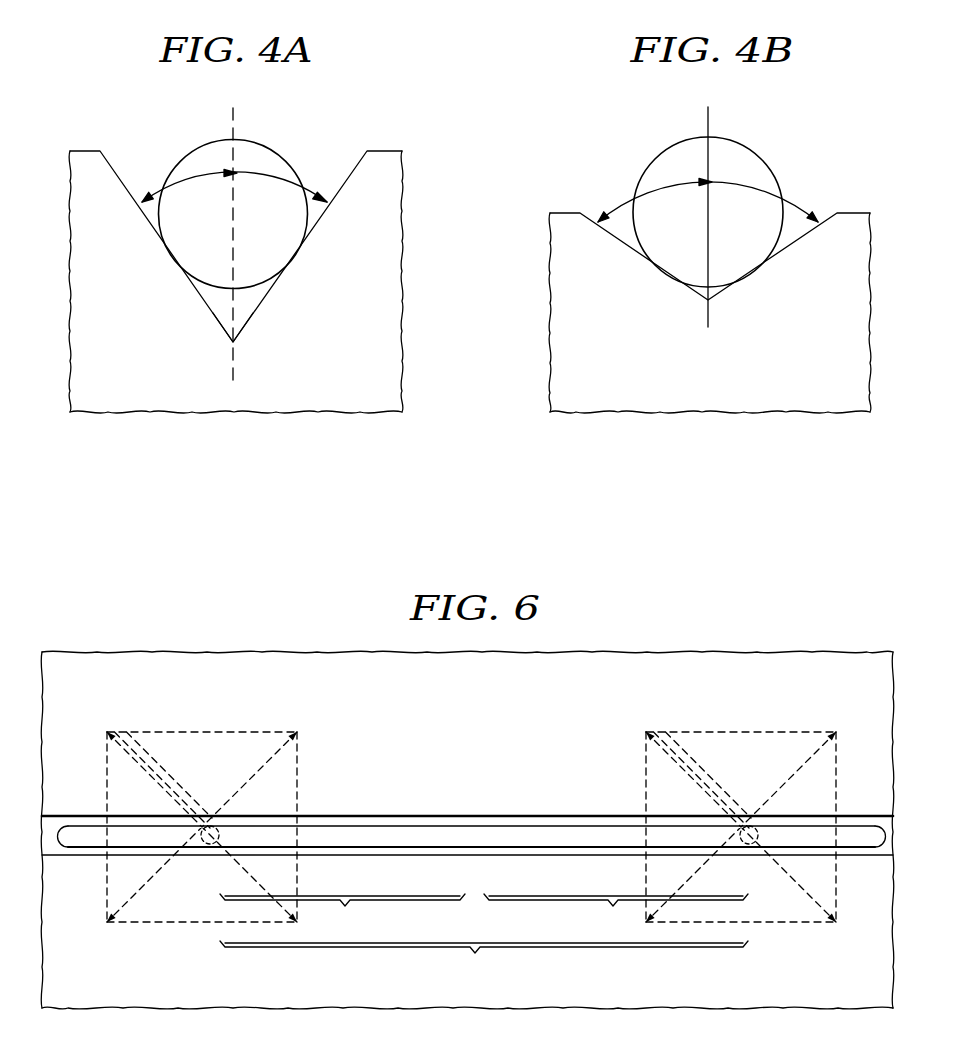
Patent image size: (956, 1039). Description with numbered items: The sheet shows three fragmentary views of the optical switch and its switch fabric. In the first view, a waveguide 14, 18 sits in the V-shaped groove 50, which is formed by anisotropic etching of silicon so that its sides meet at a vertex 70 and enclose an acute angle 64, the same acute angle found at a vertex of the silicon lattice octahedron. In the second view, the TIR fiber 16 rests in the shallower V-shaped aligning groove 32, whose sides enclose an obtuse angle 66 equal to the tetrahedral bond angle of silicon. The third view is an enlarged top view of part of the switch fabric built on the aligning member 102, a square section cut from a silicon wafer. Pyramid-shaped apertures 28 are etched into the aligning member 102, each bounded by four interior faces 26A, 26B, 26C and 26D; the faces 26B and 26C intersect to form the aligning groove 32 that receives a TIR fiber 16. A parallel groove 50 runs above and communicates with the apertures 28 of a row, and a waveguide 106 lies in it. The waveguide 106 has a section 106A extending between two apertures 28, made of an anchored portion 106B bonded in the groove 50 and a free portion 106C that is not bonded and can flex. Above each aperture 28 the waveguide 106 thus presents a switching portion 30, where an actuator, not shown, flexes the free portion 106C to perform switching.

In FIG. 4A, the optical fiber 14 is at (233, 192).
In FIG. 4A, the optical fiber 18 is at (202, 145).
In FIG. 4B, the TIR fiber 16 is at (677, 143).
In FIG. 6, the TIR fiber 16 is at (170, 774).
In FIG. 4A, the V-shaped groove 50 is at (347, 175).
In FIG. 6, the V-shaped groove 50 is at (511, 817).
In FIG. 4A, the acute angle 64 is at (262, 178).
In FIG. 4A, the V-groove vertex 70 is at (228, 347).
In FIG. 4B, the aligning groove 32 is at (827, 213).
In FIG. 4B, the obtuse angle 66 is at (737, 185).
In FIG. 6, the aligning member 102 is at (332, 653).
In FIG. 6, the waveguide 106 is at (431, 831).
In FIG. 6, the section 106A is at (484, 961).
In FIG. 6, the anchored portion 106B is at (616, 914).
In FIG. 6, the free portion 106C is at (342, 914).
In FIG. 6, the aperture 28 is at (470, 827).
In FIG. 6, the interior face 26A is at (161, 742).
In FIG. 6, the interior face 26B is at (187, 911).
In FIG. 6, the interior face 26C is at (283, 781).
In FIG. 6, the interior face 26D is at (119, 795).
In FIG. 6, the switching portion 30 is at (211, 808).